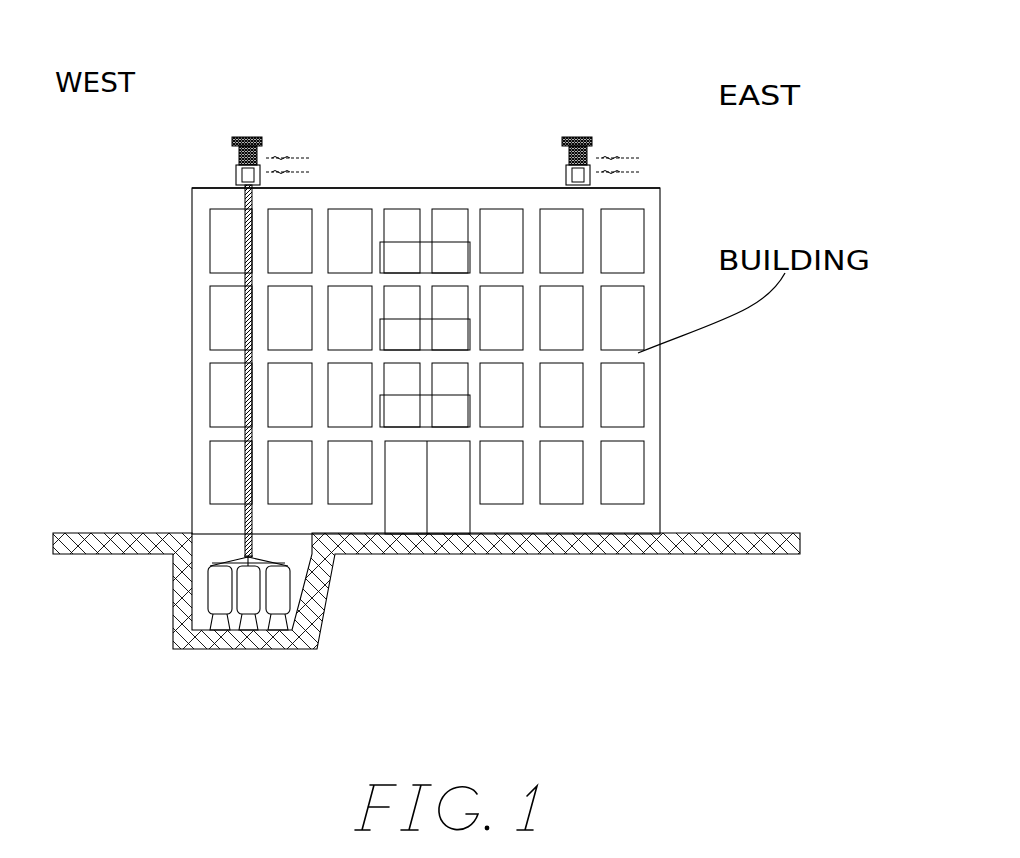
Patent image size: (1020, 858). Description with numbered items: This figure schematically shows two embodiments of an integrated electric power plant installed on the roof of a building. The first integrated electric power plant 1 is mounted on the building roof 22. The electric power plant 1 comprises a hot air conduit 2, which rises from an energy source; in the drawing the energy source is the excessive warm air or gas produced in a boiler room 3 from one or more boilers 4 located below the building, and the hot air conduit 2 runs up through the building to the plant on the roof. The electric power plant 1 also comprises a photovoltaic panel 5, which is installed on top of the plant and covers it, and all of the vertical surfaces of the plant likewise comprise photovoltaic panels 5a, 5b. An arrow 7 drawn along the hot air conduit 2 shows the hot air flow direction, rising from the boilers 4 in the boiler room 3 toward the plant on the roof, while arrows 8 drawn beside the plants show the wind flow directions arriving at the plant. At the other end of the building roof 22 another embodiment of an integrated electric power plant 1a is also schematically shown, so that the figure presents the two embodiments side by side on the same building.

The integrated electric power plant 1 is at (264, 103).
The integrated electric power plant 1a is at (615, 110).
The building roof 22 is at (397, 188).
The photovoltaic panel 5 is at (204, 123).
The photovoltaic panel 5a is at (233, 150).
The photovoltaic panel 5b is at (236, 171).
The arrows 8 is at (462, 170).
The arrow 7 is at (252, 362).
The hot air conduit 2 is at (245, 533).
The boilers 4 is at (218, 594).
The boiler room 3 is at (320, 600).